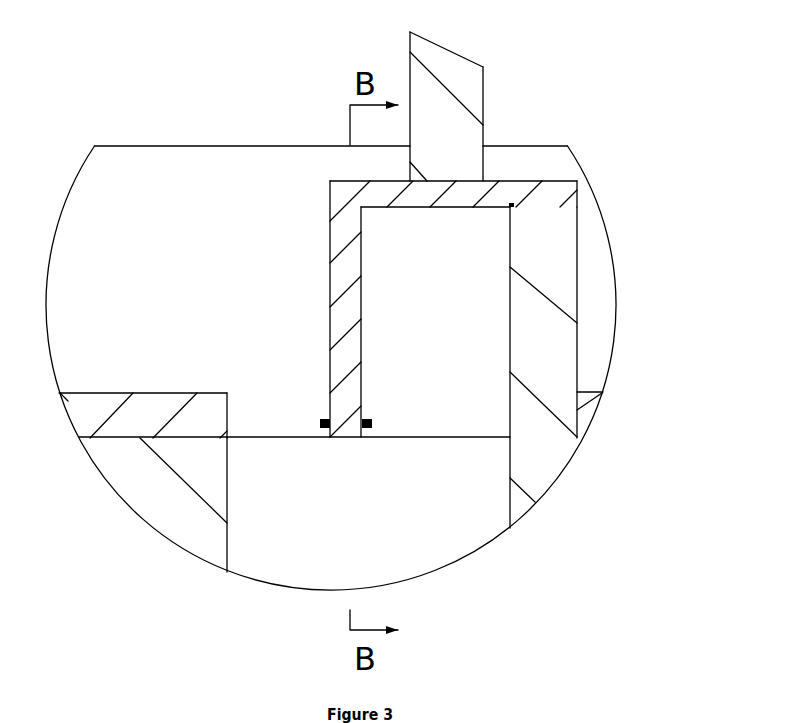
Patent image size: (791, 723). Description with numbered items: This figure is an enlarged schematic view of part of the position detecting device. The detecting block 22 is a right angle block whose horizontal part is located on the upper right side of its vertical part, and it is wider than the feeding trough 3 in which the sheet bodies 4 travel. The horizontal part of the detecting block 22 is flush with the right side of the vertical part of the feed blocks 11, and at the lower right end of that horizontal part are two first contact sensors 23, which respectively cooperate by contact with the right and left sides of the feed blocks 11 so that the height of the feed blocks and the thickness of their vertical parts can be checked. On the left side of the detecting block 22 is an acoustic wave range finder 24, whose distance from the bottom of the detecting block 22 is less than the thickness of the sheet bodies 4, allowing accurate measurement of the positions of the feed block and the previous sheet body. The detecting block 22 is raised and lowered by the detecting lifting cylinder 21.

The feeding trough 3 is at (265, 510).
The sheet body 4 is at (84, 406).
The feed block 11 is at (557, 320).
The detecting lifting cylinder 21 is at (463, 145).
The detecting block 22 is at (345, 257).
The first contact sensor 23 is at (572, 205).
The acoustic wave range finder 24 is at (364, 426).